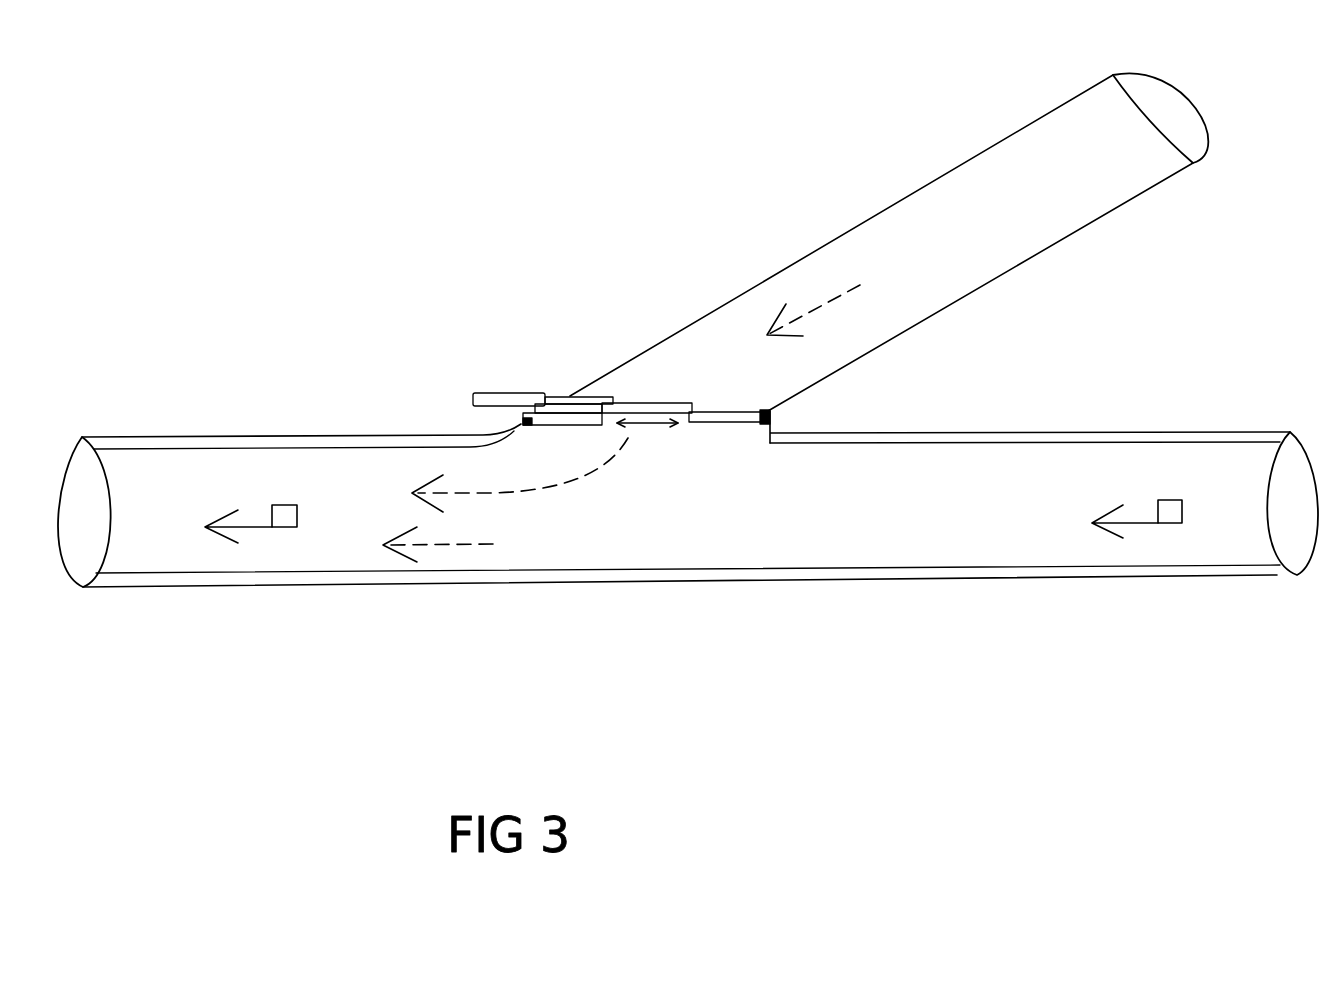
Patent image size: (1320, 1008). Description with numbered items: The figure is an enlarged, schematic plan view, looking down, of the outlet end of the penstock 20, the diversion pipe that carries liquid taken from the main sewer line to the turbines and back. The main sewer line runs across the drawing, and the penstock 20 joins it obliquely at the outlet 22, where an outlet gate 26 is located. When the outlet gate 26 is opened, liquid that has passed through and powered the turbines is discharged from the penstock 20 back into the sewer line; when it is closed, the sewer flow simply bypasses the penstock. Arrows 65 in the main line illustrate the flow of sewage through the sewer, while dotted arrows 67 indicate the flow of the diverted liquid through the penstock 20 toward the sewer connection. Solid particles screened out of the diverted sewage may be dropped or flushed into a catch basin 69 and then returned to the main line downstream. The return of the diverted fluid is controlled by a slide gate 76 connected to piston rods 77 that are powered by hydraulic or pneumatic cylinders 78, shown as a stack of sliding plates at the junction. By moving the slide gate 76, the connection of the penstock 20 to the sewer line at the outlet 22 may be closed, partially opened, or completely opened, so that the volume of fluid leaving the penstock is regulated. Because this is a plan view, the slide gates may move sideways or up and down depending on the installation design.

The penstock 20 is at (776, 266).
The outlet 22 is at (845, 331).
The outlet gate 26 is at (723, 431).
The arrows 65 is at (265, 533).
The dotted arrows 67 is at (849, 277).
The catch basin 69 is at (466, 554).
The slide gate 76 is at (651, 396).
The piston rods 77 is at (566, 392).
The hydraulic or pneumatic cylinders 78 is at (474, 388).